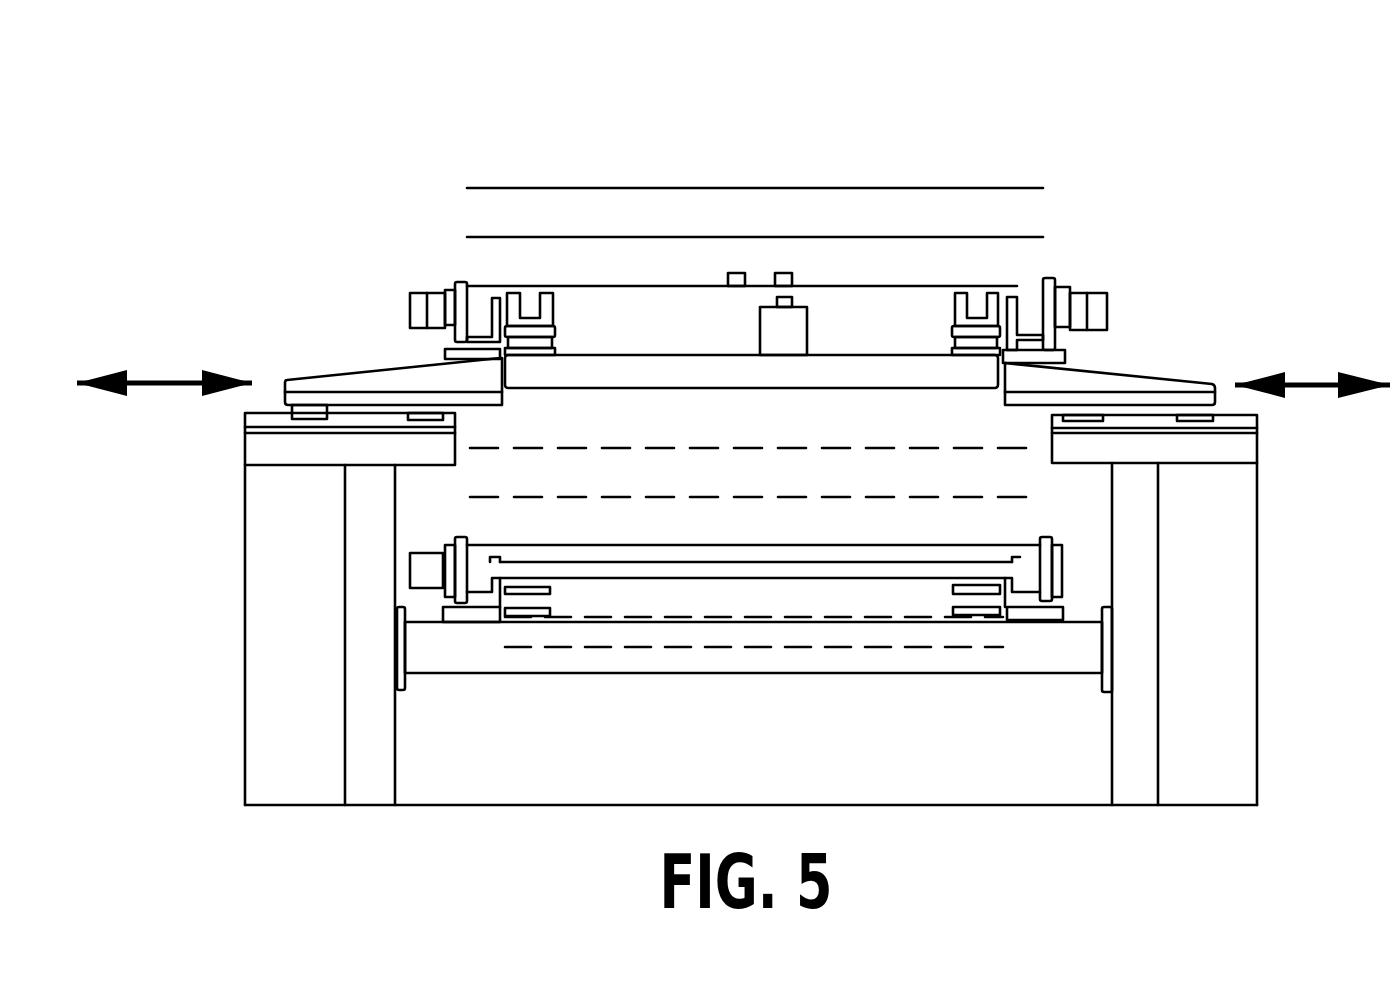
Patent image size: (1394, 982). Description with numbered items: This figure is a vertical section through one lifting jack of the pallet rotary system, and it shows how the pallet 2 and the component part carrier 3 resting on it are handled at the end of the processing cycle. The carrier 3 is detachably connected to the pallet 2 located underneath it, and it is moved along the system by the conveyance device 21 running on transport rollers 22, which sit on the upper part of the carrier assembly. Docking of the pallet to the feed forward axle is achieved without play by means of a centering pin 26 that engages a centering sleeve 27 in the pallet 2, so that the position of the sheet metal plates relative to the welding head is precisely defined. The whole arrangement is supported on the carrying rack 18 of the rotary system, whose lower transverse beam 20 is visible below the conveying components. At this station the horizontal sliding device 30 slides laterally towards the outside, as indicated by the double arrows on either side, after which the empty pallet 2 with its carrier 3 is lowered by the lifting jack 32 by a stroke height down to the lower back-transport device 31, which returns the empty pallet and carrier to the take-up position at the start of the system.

The pallet 2 is at (1025, 265).
The component part carrier 3 is at (1002, 205).
The carrying rack 18 is at (1147, 582).
The lower transverse beam 20 is at (1077, 648).
The conveyance device 21 is at (412, 302).
The transport rollers 22 is at (475, 295).
The centering pin 26 is at (788, 302).
The centering sleeve 27 is at (783, 273).
The horizontal sliding device 30 is at (1107, 377).
The lower back-transport device 31 is at (422, 558).
The lifting jack 32 is at (655, 360).